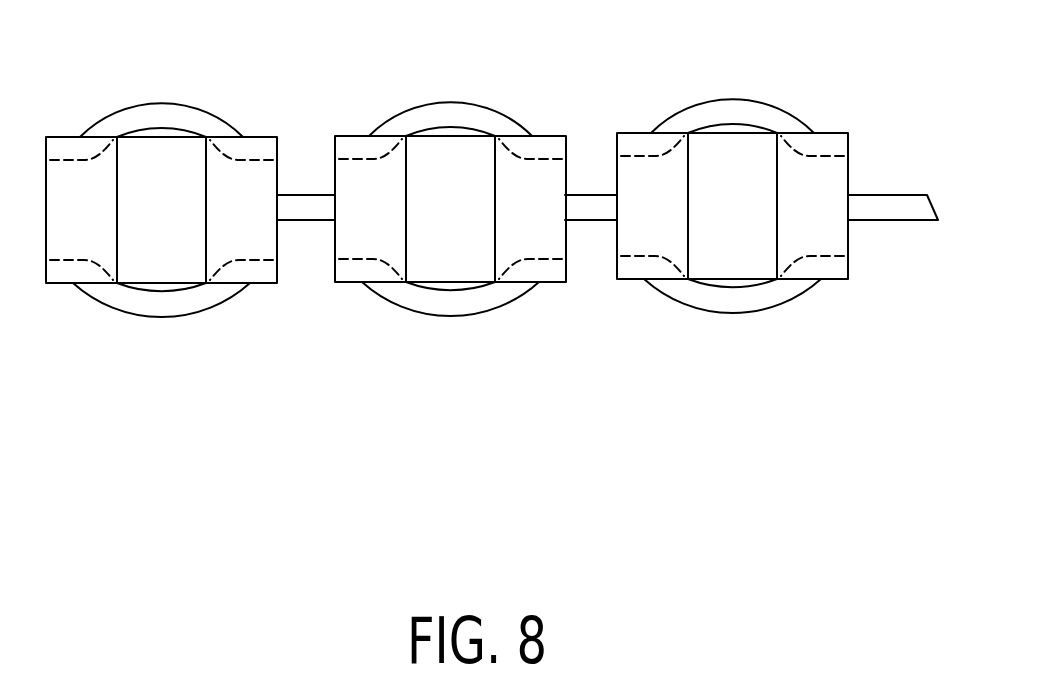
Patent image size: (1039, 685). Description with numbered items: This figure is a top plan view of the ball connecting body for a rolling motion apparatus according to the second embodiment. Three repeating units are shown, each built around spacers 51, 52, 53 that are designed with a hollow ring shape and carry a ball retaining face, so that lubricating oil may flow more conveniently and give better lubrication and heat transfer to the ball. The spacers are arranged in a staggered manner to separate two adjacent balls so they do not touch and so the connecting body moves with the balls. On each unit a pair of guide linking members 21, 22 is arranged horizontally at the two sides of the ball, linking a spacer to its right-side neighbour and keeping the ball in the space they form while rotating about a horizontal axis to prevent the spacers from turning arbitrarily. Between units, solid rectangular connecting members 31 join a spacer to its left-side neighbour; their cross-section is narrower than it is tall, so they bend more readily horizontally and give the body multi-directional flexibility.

The guide linking member 21 is at (160, 118).
The guide linking member 22 is at (165, 310).
The connecting member 31 is at (305, 210).
The spacer 51 is at (345, 282).
The spacer 52 is at (260, 280).
The spacer 53 is at (62, 145).